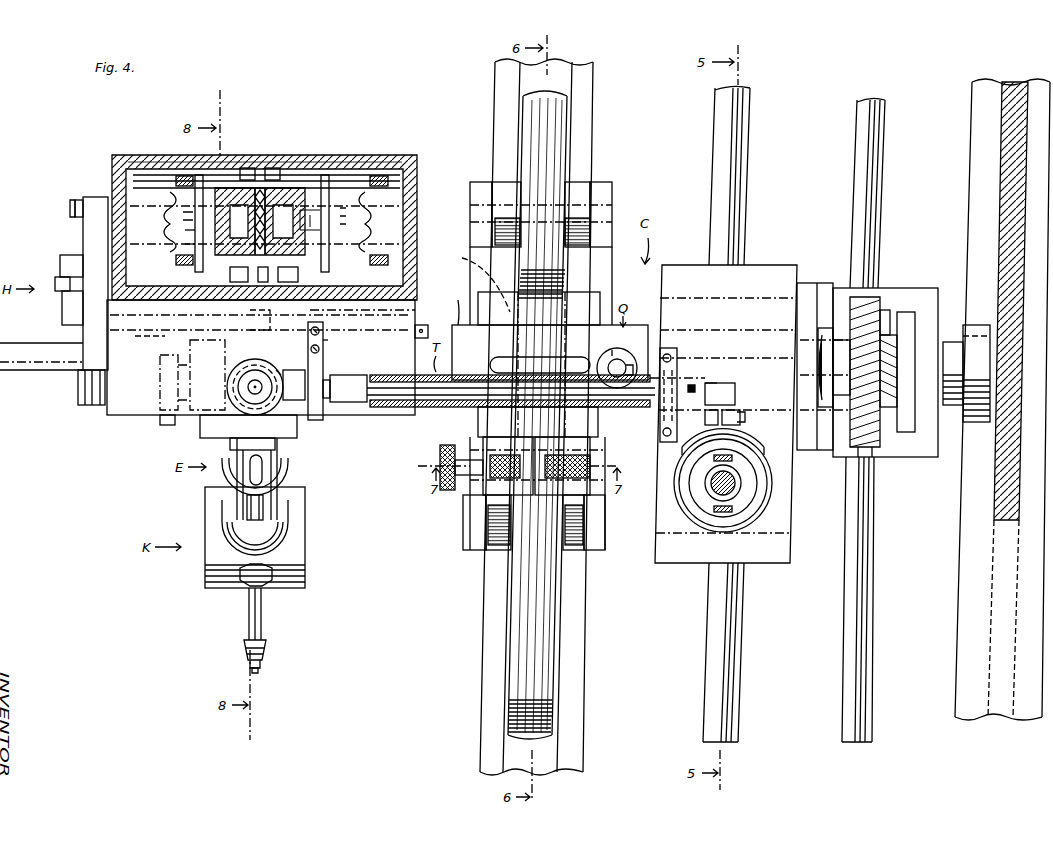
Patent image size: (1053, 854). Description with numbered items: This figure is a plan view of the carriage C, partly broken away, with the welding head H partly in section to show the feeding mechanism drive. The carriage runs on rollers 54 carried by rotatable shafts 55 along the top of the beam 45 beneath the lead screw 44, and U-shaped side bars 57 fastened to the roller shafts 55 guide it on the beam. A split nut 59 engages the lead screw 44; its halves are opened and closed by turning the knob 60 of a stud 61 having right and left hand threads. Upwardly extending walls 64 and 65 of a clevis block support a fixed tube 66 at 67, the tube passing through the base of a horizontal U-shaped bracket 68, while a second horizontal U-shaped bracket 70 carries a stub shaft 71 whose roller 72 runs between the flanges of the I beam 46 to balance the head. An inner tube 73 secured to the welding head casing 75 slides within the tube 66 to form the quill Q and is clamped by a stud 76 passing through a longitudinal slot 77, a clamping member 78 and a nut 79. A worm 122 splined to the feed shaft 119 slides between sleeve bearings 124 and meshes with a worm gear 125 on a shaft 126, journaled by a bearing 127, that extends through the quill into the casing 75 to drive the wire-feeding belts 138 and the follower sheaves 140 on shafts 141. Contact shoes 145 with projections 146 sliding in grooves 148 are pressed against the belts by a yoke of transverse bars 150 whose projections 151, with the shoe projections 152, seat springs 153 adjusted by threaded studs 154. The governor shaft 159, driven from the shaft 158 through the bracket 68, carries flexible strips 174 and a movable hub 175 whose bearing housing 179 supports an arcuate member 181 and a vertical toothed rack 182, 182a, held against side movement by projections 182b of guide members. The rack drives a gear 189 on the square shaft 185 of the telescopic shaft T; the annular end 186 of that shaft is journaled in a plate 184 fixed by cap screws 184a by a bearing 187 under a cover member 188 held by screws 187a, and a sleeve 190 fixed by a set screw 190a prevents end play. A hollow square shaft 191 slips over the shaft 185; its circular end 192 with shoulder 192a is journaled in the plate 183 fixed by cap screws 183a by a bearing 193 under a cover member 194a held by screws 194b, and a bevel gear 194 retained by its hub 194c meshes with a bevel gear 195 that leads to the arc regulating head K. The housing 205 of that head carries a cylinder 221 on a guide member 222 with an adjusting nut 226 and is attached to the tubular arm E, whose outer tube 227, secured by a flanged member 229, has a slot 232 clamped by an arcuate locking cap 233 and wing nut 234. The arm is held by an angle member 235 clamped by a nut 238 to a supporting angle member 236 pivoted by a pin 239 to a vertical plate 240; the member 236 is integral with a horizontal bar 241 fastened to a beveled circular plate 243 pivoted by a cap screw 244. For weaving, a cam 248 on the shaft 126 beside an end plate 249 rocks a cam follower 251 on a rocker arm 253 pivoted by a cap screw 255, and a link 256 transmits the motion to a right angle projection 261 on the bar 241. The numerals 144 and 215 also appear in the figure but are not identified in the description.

The lead screw 44 is at (558, 661).
The beam 45 is at (490, 657).
The I beam 46 is at (1002, 399).
The rollers 54 is at (611, 158).
The roller shafts 55 is at (482, 197).
The U-shaped side bar 57 is at (470, 264).
The split nut 59 is at (487, 450).
The knob 60 is at (440, 446).
The stud 61 is at (463, 475).
The upwardly extending wall 64 is at (595, 305).
The upwardly extending wall 65 is at (590, 432).
The fixed tube 66 is at (458, 301).
The support 67 is at (464, 247).
The horizontal U-shaped bracket 68 is at (791, 492).
The horizontal U-shaped bracket 70 is at (903, 458).
The stub shaft 71 is at (950, 342).
The roller 72 is at (974, 327).
The inner tube 73 is at (436, 330).
The welding head casing 75 is at (347, 156).
The stud 76 is at (603, 363).
The longitudinal slot 77 is at (501, 360).
The clamping member 78 is at (610, 361).
The nut 79 is at (625, 350).
The feed shaft 119 is at (863, 607).
The worm 122 is at (904, 335).
The sleeve bearings 124 is at (888, 310).
The worm gear 125 is at (853, 452).
The shaft 126 is at (22, 349).
The bearing 127 is at (823, 327).
The belts 138 is at (169, 189).
The follower sheaves 140 is at (183, 264).
The shafts 141 is at (214, 278).
The spring seat 144 is at (358, 229).
The contact shoes 145 is at (262, 188).
The projections 146 is at (252, 170).
The horizontal grooves 148 is at (392, 155).
The transverse bars 150 is at (172, 203).
The projections 151 is at (186, 231).
The projections 152 is at (184, 219).
The springs 153 is at (186, 245).
The threaded stud 154 is at (288, 188).
The shaft 158 is at (746, 148).
The governor shaft 159 is at (740, 490).
The flexible metallic strips 174 is at (703, 463).
The movable hub member 175 is at (703, 498).
The housing 179 is at (750, 470).
The arcuate shaped member 181 is at (690, 423).
The toothed rack 182 is at (743, 413).
The toothed rack 182a is at (745, 418).
The projections 182b is at (741, 425).
The vertical plate 183 is at (325, 327).
The cap screws 183a is at (326, 344).
The vertical plate 184 is at (670, 352).
The cap screws 184a is at (676, 360).
The square shaped shaft 185 is at (649, 406).
The annular end portion 186 is at (688, 383).
The bearing 187 is at (660, 449).
The screws 187a is at (645, 290).
The cover member 188 is at (662, 348).
The gear 189 is at (735, 384).
The sleeve member 190 is at (712, 382).
The set screw 190a is at (710, 382).
The hollow square shaped shaft 191 is at (382, 380).
The circular end portion 192 is at (328, 375).
The shoulder 192a is at (332, 402).
The bearing 193 is at (313, 405).
The bevel gear 194 is at (292, 370).
The cover member 194a is at (333, 410).
The screws 194b is at (338, 369).
The hub 194c is at (295, 363).
The bevel gear 195 is at (250, 361).
The housing 205 is at (317, 535).
The tip 215 is at (259, 671).
The cylinder 221 is at (262, 613).
The guide member 222 is at (245, 581).
The nut 226 is at (264, 658).
The outer tube 227 is at (277, 455).
The flanged member 229 is at (222, 525).
The longitudinal slot 232 is at (263, 471).
The locking cap 233 is at (299, 482).
The wing nut 234 is at (285, 500).
The angle member 235 is at (205, 351).
The supporting angle member 236 is at (200, 427).
The clamp nut 238 is at (160, 408).
The pin 239 is at (253, 450).
The vertical plate 240 is at (273, 402).
The horizontal bar 241 is at (153, 337).
The circular plate 243 is at (333, 314).
The cap screw 244 is at (267, 336).
The cam 248 is at (90, 405).
The end plate 249 is at (78, 390).
The cam follower 251 is at (55, 278).
The rocker arm 253 is at (83, 235).
The cap screw 255 is at (70, 206).
The link 256 is at (60, 259).
The right angle projection 261 is at (62, 311).